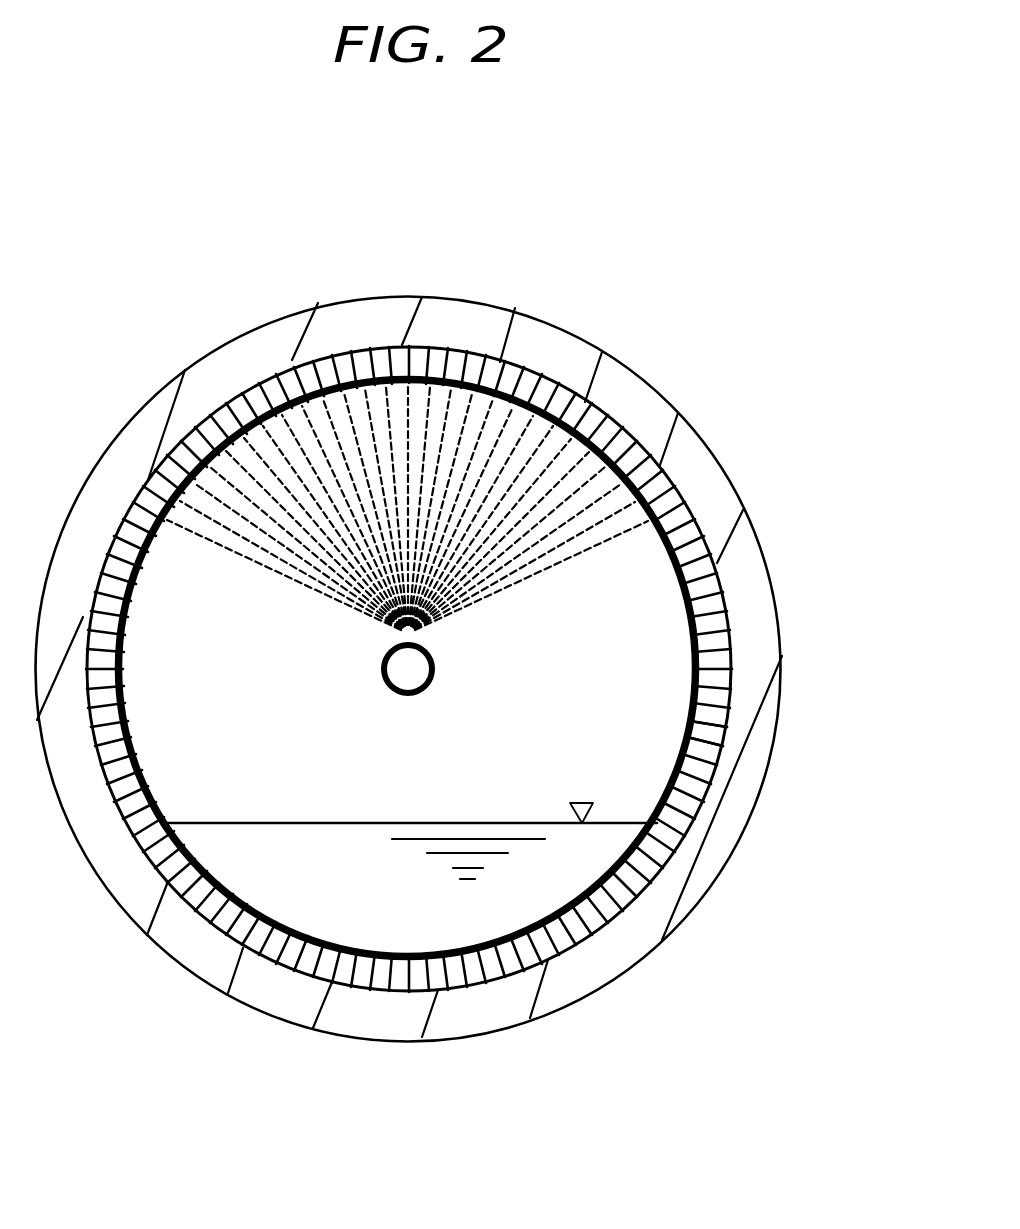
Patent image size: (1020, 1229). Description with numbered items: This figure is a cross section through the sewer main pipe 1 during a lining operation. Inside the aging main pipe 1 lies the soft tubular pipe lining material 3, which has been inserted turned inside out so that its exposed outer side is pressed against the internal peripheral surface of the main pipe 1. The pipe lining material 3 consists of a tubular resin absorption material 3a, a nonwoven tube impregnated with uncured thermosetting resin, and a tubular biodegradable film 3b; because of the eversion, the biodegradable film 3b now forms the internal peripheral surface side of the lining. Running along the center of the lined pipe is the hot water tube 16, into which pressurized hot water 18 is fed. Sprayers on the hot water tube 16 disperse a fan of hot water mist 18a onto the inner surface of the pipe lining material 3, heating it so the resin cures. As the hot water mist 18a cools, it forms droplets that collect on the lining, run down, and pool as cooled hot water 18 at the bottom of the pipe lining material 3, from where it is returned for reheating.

The main pipe 1 is at (468, 298).
The pipe lining material 3 is at (598, 417).
The tubular resin absorption material 3a is at (720, 652).
The biodegradable film 3b is at (693, 746).
The hot water tube 16 is at (435, 653).
The hot water 18 is at (548, 849).
The hot water mist 18a is at (522, 478).